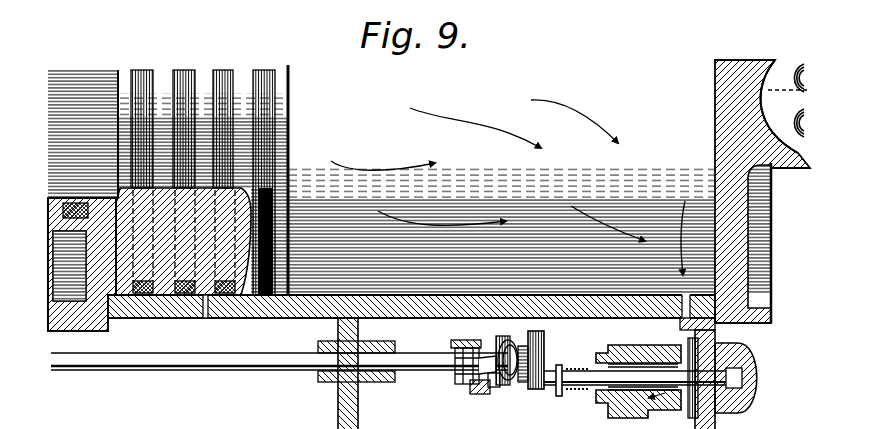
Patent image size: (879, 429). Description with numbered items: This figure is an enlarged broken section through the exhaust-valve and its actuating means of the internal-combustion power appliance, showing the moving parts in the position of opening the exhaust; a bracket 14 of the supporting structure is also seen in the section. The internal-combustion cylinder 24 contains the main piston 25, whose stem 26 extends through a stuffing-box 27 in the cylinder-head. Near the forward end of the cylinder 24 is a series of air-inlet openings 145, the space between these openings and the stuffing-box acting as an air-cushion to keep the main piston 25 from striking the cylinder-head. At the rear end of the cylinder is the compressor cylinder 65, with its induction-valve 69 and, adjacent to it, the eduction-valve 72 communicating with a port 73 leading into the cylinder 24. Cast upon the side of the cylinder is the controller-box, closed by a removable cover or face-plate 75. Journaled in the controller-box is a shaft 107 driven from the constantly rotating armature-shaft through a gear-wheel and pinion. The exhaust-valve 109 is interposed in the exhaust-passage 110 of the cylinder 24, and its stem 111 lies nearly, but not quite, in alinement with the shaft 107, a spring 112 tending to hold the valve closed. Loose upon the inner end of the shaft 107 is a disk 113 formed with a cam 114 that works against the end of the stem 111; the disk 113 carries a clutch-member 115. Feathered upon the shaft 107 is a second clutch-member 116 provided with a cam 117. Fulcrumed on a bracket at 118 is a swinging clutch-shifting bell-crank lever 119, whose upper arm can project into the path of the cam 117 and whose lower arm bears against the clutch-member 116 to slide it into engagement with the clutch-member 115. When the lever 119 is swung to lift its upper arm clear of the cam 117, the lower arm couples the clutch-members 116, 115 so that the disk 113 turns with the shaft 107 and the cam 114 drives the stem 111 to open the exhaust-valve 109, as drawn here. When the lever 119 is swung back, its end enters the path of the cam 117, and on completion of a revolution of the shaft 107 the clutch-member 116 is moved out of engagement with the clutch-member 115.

The bracket 14 is at (330, 404).
The internal-combustion cylinder 24 is at (151, 309).
The main piston 25 is at (267, 100).
The stem 26 is at (83, 185).
The stuffing-box 27 is at (60, 195).
The compressor cylinder 65 is at (779, 106).
The induction-valve 69 is at (779, 243).
The eduction-valve 72 is at (793, 66).
The port 73 is at (740, 80).
The cover or face-plate 75 is at (404, 424).
The shaft 107 is at (262, 363).
The exhaust-valve 109 is at (722, 360).
The exhaust-passage 110 is at (710, 326).
The stem of the exhaust-valve 111 is at (580, 417).
The spring 112 is at (578, 352).
The disk 113 is at (536, 338).
The cam 114 is at (551, 356).
The clutch-member 115 is at (515, 376).
The clutch-member 116 is at (500, 336).
The cam 117 is at (493, 380).
The bracket fulcrum 118 is at (460, 377).
The bell-crank lever 119 is at (458, 350).
The air-inlet openings 145 is at (198, 310).